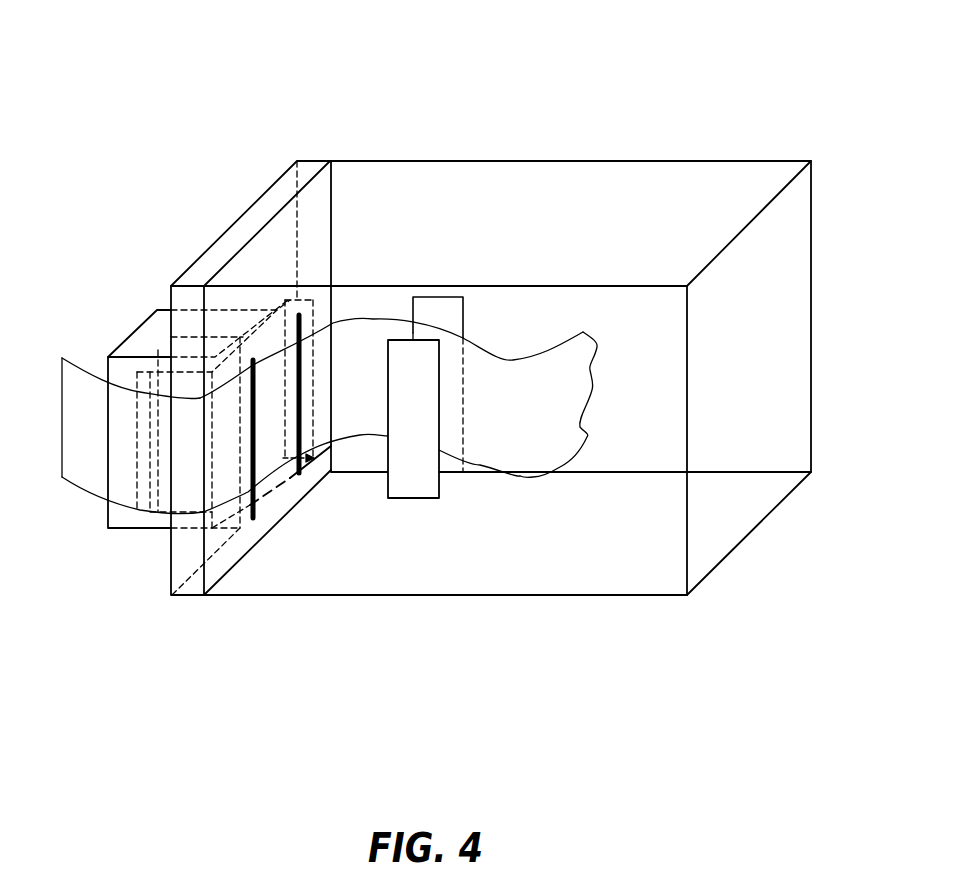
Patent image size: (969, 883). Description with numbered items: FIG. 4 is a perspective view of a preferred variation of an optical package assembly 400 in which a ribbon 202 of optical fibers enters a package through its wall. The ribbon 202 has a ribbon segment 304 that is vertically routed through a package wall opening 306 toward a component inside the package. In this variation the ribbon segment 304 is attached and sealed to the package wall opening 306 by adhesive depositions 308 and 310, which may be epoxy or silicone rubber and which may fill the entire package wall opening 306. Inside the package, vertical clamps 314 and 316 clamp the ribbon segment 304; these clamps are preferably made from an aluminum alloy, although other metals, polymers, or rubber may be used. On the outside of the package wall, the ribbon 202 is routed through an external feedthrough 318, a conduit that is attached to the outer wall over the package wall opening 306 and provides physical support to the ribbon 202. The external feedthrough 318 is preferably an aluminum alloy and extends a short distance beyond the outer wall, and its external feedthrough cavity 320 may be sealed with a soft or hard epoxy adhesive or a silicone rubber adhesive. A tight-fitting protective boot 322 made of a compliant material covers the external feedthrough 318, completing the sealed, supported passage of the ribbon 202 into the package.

The optical module assembly 400 is at (478, 92).
The ribbon 202 is at (63, 478).
The ribbon segment 304 is at (398, 415).
The package wall opening 306 is at (225, 478).
The adhesive deposition 308 is at (255, 388).
The adhesive deposition 310 is at (300, 315).
The vertical clamp 314 is at (413, 419).
The vertical clamp 316 is at (438, 384).
The external feedthrough 318 is at (155, 352).
The external feedthrough cavity 320 is at (107, 357).
The protective boot 322 is at (128, 530).